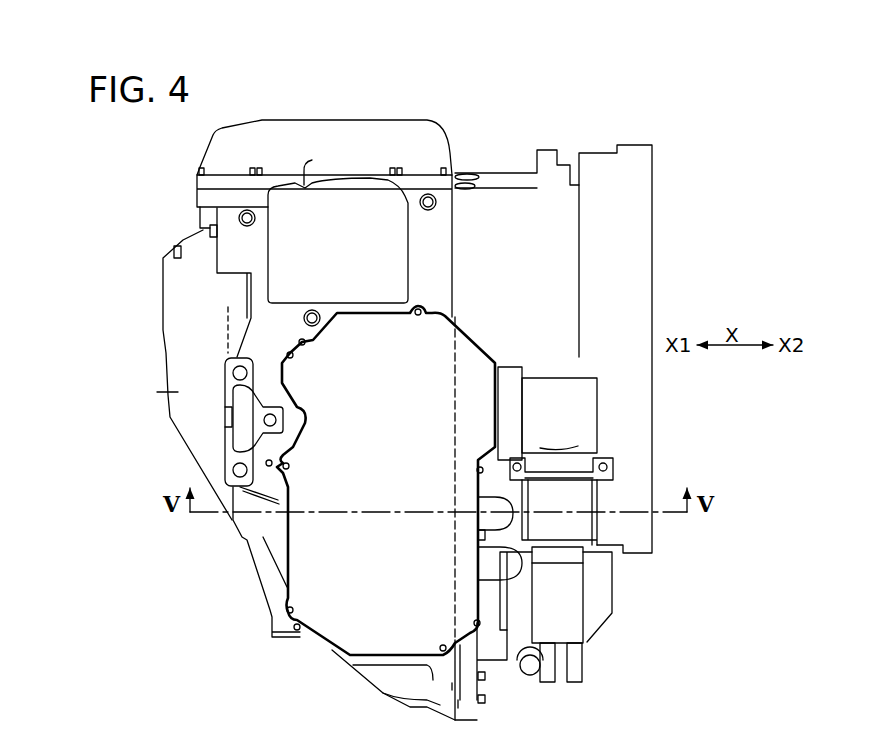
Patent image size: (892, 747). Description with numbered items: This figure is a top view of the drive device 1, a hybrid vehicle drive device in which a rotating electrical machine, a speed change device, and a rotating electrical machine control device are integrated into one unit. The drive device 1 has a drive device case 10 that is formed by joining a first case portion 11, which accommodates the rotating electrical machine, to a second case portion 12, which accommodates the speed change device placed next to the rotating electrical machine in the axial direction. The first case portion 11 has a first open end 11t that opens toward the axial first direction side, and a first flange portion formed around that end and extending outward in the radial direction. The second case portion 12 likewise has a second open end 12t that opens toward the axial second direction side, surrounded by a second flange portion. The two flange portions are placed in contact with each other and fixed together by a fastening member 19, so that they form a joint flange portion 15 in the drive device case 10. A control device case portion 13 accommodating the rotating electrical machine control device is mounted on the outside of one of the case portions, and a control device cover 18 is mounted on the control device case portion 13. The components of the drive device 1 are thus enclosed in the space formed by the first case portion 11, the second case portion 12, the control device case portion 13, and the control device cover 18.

The drive device 1 is at (138, 226).
The drive device case 10 is at (490, 238).
The first case portion 11 is at (660, 225).
The second case portion 12 is at (160, 392).
The control device case portion 13 is at (317, 638).
The joint flange portion 15 is at (447, 743).
The control device cover 18 is at (315, 549).
The fastening member 19 is at (485, 678).
The first open end 11t is at (452, 685).
The second open end 12t is at (464, 706).